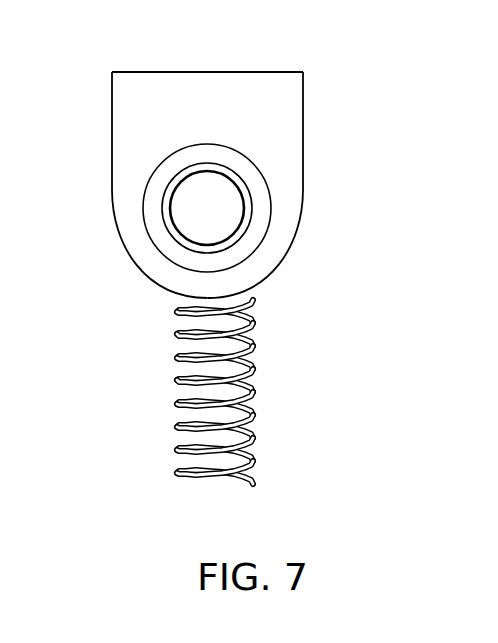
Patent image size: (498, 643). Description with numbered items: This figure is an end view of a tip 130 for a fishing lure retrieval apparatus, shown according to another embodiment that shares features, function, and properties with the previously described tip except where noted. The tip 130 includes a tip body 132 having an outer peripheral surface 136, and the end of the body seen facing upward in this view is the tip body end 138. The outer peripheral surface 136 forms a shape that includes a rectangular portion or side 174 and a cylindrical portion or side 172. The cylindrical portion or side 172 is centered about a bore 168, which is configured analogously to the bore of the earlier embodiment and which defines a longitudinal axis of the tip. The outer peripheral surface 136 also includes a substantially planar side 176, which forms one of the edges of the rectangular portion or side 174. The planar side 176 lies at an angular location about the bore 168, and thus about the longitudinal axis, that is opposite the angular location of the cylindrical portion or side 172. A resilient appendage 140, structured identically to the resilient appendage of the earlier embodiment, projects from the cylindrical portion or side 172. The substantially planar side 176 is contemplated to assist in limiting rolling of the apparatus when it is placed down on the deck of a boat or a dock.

The tip 130 is at (362, 119).
The tip body 132 is at (303, 180).
The outer peripheral surface 136 is at (127, 274).
The tip body end 138 is at (320, 93).
The resilient appendage 140 is at (256, 430).
The bore 168 is at (236, 186).
The cylindrical portion or side 172 is at (287, 268).
The rectangular portion or side 174 is at (112, 92).
The substantially planar side 176 is at (238, 72).